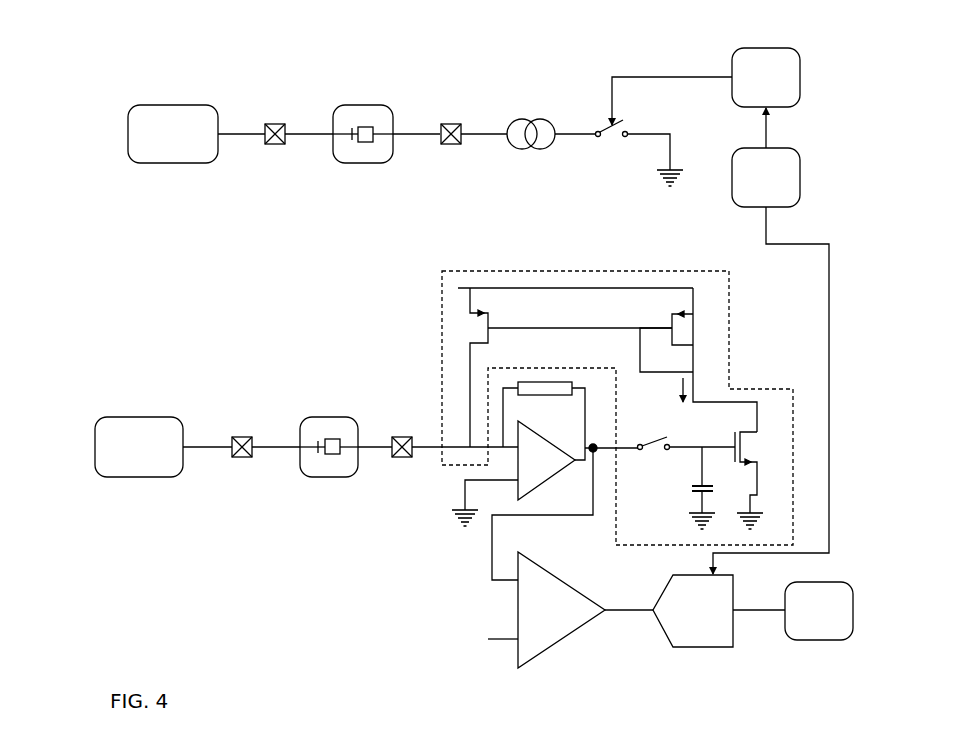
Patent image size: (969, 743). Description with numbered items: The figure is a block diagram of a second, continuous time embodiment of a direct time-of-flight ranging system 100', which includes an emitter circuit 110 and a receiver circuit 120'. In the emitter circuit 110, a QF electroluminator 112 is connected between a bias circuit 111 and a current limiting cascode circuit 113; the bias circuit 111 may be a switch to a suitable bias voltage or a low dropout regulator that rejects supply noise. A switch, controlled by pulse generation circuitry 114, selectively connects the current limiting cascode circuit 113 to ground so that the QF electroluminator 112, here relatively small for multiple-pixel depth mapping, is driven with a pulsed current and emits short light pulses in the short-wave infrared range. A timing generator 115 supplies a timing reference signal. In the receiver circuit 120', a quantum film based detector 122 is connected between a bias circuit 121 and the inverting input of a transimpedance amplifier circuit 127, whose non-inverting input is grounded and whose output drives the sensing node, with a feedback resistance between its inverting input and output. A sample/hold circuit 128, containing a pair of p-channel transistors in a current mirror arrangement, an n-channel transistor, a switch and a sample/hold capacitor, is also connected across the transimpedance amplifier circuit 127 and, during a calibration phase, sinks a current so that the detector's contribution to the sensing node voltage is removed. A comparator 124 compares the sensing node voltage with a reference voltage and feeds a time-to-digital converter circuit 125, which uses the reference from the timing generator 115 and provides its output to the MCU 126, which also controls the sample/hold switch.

The direct time-of-flight ranging system 100' is at (429, 350).
The emitter circuit 110 is at (104, 137).
The bias circuit 111 is at (148, 165).
The QF electroluminator 112 is at (347, 165).
The current limiting cascode circuit 113 is at (515, 150).
The pulse generation circuitry 114 is at (733, 108).
The timing generator 115 is at (733, 208).
The receiver circuit 120' is at (261, 464).
The bias circuit 121 is at (118, 478).
The quantum film based detector 122 is at (318, 478).
The comparator 124 is at (563, 642).
The time-to-digital converter circuit 125 is at (688, 648).
The MCU 126 is at (805, 646).
The transimpedance amplifier circuit 127 is at (557, 475).
The sample/hold circuit 128 is at (786, 388).